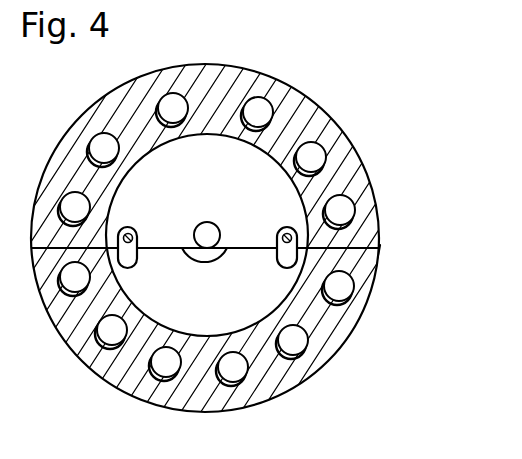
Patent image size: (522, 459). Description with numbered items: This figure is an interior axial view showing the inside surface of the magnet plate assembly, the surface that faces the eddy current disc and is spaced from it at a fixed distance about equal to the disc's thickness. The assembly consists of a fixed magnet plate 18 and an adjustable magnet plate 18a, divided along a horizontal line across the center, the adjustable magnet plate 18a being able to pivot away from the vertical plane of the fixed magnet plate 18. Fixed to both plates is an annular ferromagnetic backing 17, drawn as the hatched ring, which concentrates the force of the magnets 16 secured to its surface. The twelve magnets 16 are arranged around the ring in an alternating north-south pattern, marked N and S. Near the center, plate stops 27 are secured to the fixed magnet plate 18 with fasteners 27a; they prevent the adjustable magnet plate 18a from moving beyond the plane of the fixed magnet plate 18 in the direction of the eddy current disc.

The magnets 16 is at (92, 138).
The annular ferromagnetic backing 17 is at (353, 176).
The fixed magnet plate 18 is at (205, 235).
The adjustable magnet plate 18a is at (210, 280).
The plate stops 27 is at (134, 262).
The fasteners 27a is at (133, 232).